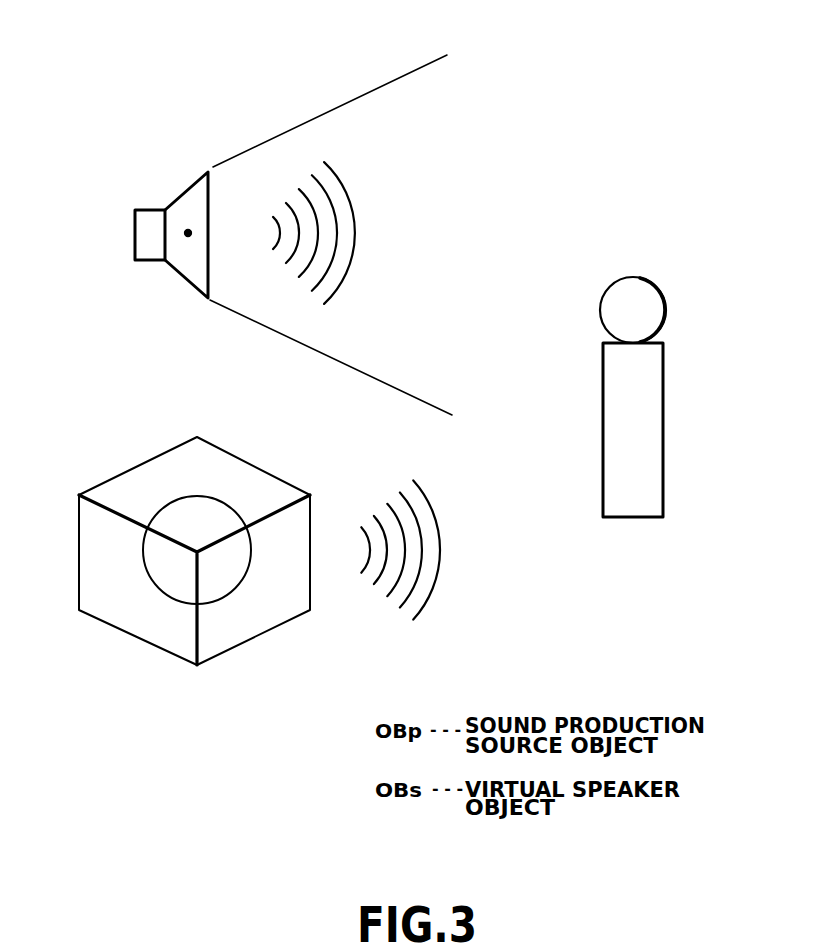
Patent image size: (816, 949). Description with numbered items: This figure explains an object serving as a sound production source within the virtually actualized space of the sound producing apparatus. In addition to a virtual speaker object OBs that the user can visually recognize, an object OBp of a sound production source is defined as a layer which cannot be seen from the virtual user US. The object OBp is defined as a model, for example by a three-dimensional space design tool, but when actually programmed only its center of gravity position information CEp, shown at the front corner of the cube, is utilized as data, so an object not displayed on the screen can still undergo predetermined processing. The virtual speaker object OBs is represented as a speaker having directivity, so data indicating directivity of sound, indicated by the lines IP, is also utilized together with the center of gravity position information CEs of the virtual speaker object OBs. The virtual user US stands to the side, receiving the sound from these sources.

The directivity of sound data IP is at (400, 78).
The virtual speaker object OBs is at (178, 282).
The center of gravity position information of the virtual speaker object CEs is at (188, 233).
The object of sound production source OBp is at (265, 642).
The center of gravity position information of the sound production source object CEp is at (197, 552).
The virtual user US is at (650, 457).